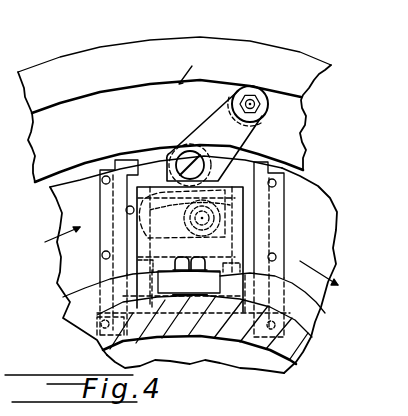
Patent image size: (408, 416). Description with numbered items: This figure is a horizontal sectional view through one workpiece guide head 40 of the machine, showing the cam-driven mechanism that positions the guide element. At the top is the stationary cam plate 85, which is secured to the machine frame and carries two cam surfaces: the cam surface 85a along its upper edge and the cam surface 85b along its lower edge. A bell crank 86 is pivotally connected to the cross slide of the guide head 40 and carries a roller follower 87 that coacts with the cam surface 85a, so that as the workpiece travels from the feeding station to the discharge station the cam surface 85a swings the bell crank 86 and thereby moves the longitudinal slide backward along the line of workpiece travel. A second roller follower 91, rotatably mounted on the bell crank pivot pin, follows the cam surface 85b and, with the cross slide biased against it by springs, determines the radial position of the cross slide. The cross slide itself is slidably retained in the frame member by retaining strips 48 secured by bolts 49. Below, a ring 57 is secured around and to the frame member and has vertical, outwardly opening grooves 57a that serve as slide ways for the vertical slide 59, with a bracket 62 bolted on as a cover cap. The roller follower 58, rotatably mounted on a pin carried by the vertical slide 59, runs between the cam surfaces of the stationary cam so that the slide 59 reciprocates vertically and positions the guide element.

The workpiece guide head 40 is at (294, 230).
The retaining strips 48 is at (104, 197).
The bolts 49 is at (101, 255).
The ring 57 is at (62, 322).
The vertical outwardly opening grooves 57a is at (253, 280).
The roller follower 58 is at (186, 341).
The vertical slide 59 is at (208, 278).
The brackets 62 is at (241, 215).
The cam plate 85 is at (73, 55).
The cam surface 85a is at (194, 66).
The cam surface 85b is at (83, 163).
The bell crank 86 is at (178, 150).
The roller follower 87 is at (265, 115).
The roller follower 91 is at (174, 152).